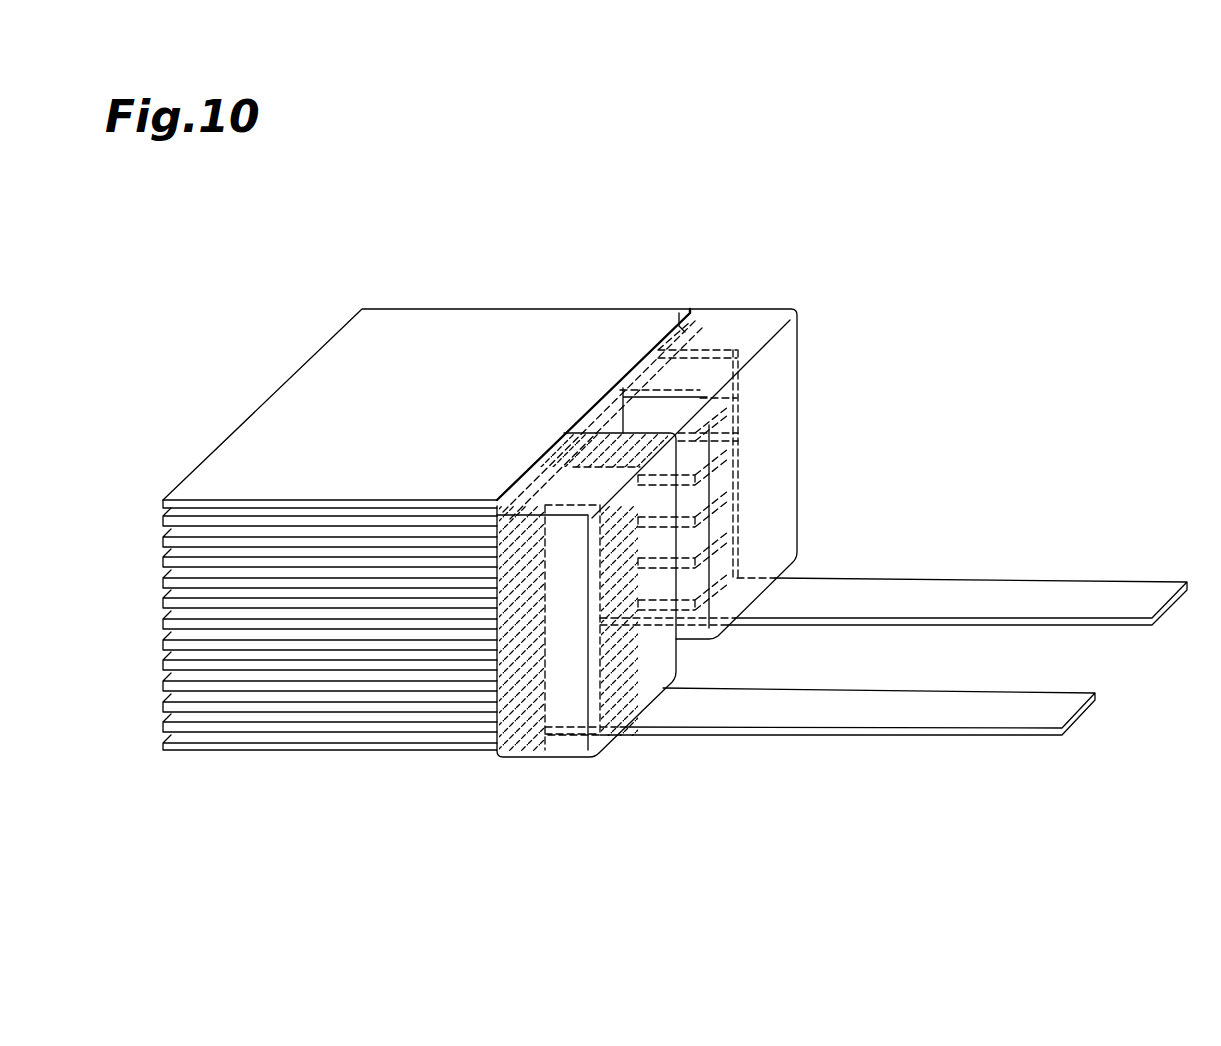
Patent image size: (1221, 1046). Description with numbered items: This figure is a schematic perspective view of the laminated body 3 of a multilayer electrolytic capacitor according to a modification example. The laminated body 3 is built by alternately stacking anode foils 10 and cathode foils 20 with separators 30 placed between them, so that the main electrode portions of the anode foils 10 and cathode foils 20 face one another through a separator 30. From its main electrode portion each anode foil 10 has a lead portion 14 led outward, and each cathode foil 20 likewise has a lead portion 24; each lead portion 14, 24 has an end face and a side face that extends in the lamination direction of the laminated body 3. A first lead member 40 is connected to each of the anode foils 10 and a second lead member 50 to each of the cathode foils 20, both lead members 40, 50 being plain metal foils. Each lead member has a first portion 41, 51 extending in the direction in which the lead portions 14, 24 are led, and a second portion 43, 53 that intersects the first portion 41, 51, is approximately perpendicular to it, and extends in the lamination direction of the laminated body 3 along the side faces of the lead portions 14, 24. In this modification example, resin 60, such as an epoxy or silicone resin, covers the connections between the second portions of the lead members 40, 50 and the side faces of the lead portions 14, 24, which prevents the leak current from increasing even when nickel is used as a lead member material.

The laminated body 3 is at (608, 265).
The anode foil 10 is at (513, 503).
The lead portion 14 is at (580, 487).
The cathode foil 20 is at (681, 308).
The lead portion 24 is at (690, 340).
The separator 30 is at (399, 346).
The first lead member 40 is at (725, 822).
The first portion 41 is at (722, 735).
The second portion 43 is at (565, 735).
The second lead member 50 is at (858, 457).
The first portion 51 is at (827, 593).
The second portion 53 is at (736, 471).
The resin 60 is at (800, 392).